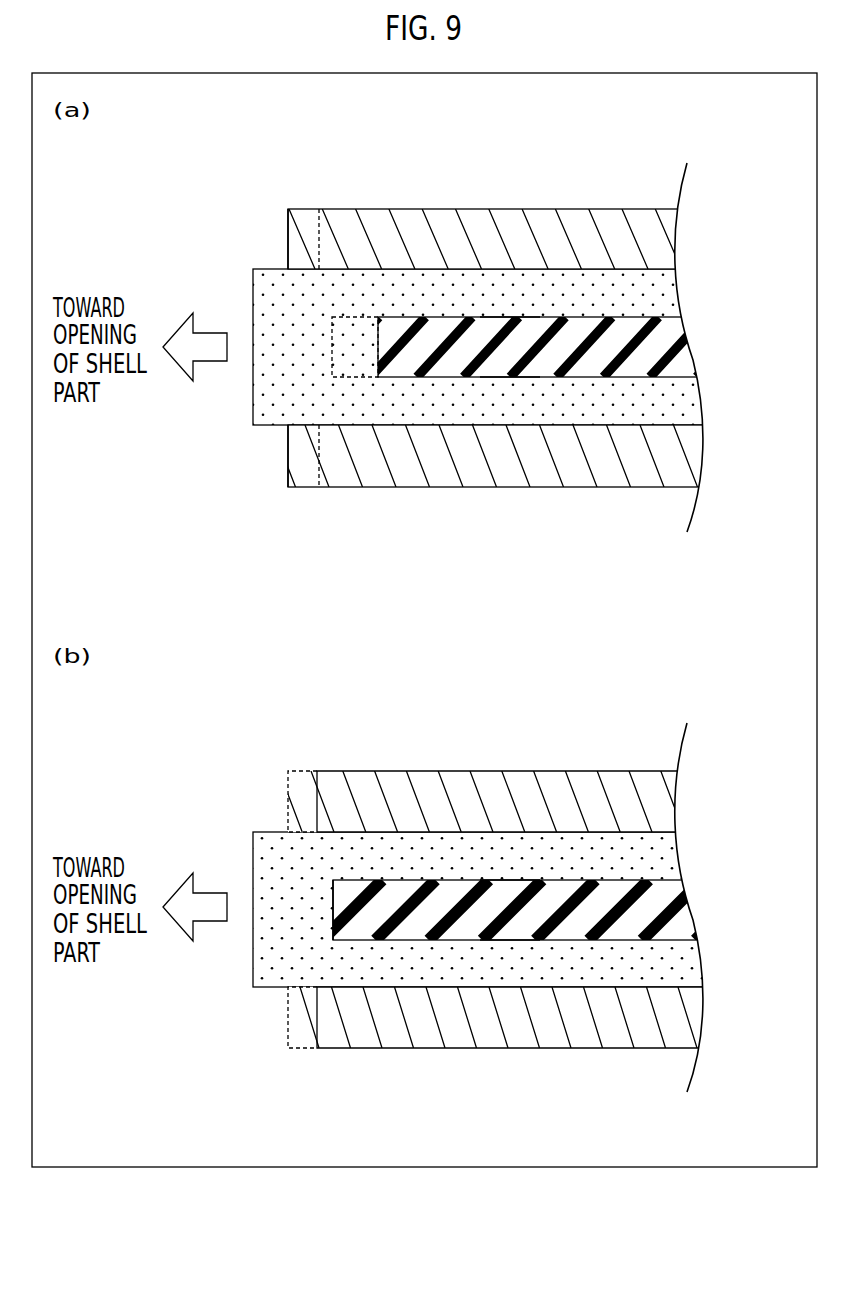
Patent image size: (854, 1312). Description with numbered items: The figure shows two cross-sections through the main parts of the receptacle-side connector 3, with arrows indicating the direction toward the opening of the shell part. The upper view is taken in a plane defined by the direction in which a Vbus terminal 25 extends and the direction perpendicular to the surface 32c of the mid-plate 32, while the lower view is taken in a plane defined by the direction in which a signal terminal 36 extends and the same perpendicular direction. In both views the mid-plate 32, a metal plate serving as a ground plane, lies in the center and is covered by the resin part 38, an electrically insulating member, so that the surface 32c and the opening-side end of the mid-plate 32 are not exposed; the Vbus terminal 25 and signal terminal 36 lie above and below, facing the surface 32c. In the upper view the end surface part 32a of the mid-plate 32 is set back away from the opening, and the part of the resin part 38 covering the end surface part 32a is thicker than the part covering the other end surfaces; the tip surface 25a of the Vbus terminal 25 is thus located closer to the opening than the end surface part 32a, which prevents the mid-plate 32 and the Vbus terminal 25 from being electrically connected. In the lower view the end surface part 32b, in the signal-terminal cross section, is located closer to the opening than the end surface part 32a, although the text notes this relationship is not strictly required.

The receptacle-side connector 3 is at (749, 177).
The Vbus terminal 25 is at (305, 232).
The tip surface of the Vbus terminal 25a is at (288, 240).
The mid-plate 32 is at (583, 348).
The end surface part 32a is at (377, 347).
The end surface part 32b is at (333, 905).
The surface of the mid-plate 32c is at (530, 317).
The signal terminal 36 is at (428, 233).
The resin part 38 is at (655, 295).